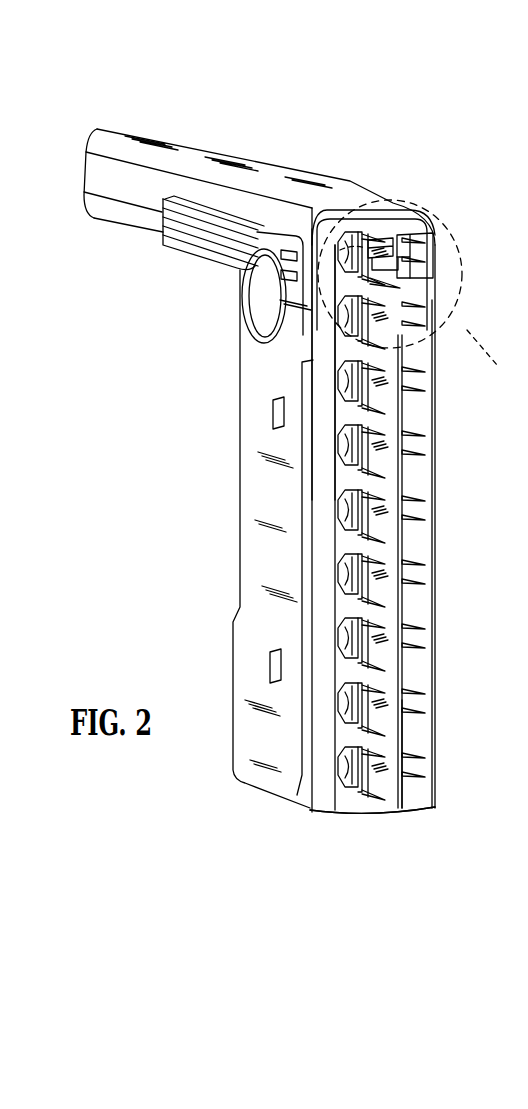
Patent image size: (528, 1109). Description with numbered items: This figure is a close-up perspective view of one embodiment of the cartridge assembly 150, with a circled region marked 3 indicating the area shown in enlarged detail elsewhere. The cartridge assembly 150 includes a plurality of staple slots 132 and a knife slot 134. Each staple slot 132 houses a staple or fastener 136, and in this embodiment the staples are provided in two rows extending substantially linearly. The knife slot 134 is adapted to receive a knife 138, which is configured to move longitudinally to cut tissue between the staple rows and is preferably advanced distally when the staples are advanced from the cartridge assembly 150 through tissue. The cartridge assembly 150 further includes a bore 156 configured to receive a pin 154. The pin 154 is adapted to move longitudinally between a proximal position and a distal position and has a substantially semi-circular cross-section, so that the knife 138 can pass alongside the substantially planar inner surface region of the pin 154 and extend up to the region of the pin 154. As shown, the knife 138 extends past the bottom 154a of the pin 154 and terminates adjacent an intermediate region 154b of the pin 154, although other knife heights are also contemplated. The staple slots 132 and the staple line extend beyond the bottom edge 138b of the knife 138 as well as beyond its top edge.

The cartridge assembly 150 is at (342, 172).
The staple slots 132 is at (338, 336).
The knife slot 134 is at (340, 386).
The staple 136 is at (360, 795).
The knife 138 is at (395, 472).
The bottom edge of the knife 138b is at (435, 807).
The pin 154 is at (402, 272).
The bottom of the pin 154a is at (455, 302).
The intermediate region of the pin 154b is at (393, 247).
The bore 156 is at (330, 284).
The detail region of FIG. 3 is at (486, 365).